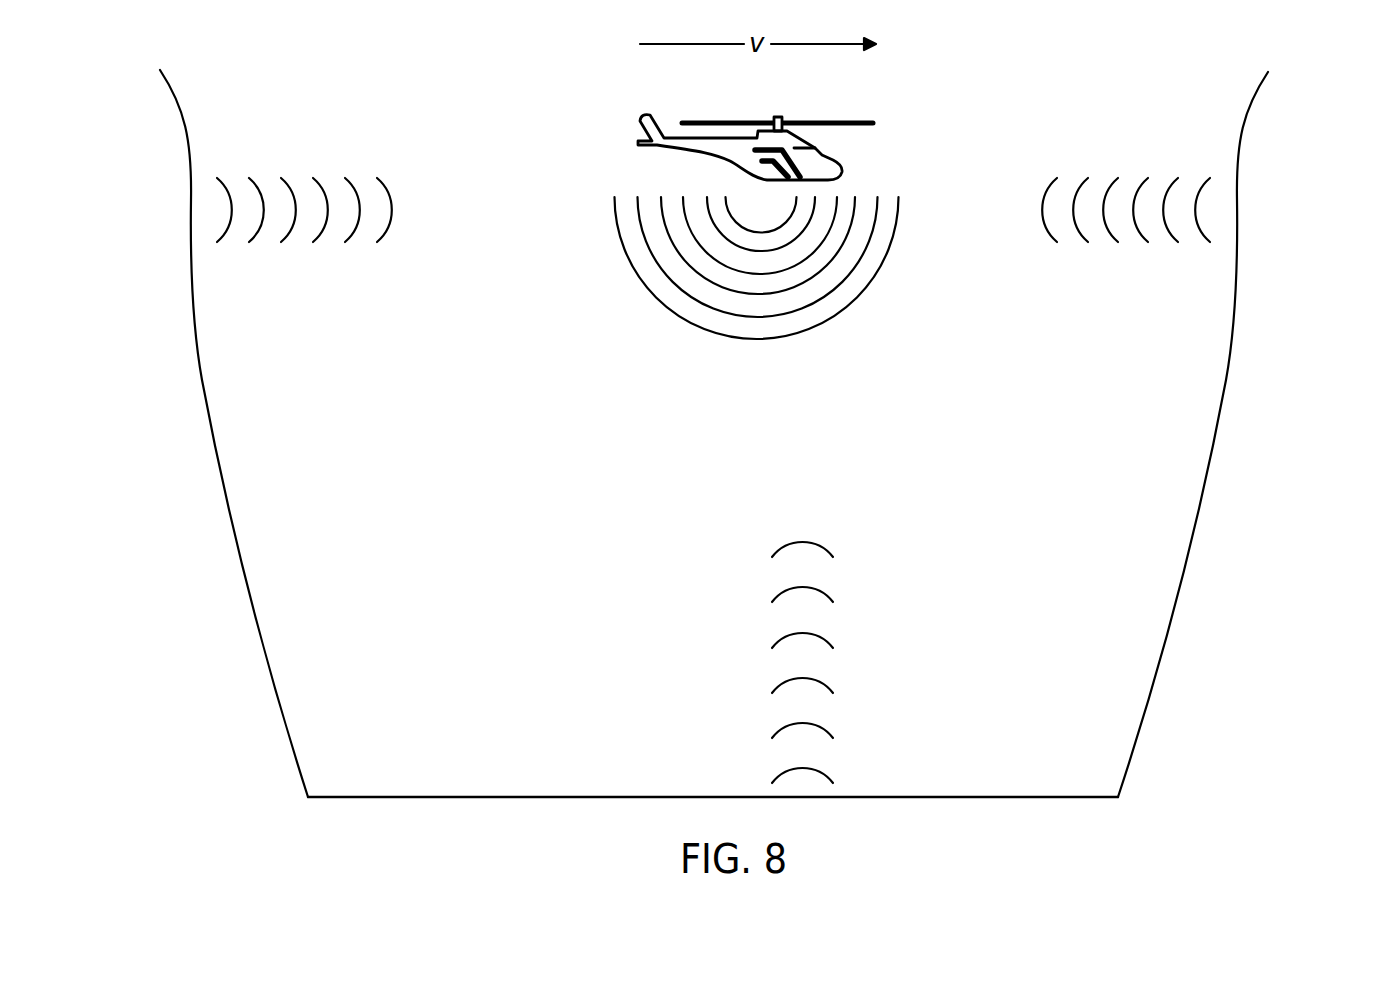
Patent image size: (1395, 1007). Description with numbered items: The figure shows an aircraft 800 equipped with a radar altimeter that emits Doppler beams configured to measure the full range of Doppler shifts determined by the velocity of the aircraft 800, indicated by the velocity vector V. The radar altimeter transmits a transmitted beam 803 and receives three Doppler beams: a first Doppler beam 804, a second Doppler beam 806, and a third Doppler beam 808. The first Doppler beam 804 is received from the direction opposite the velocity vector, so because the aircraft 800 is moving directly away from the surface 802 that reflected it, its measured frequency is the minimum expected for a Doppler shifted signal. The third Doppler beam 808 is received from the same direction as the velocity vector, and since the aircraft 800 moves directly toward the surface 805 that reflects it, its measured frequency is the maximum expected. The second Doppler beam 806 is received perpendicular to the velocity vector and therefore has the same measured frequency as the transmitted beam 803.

The aircraft 800 is at (827, 122).
The surface 802 is at (160, 80).
The transmitted beam 803 is at (626, 251).
The first Doppler beam 804 is at (316, 178).
The surface 805 is at (1265, 80).
The second Doppler beam 806 is at (773, 600).
The third Doppler beam 808 is at (1115, 178).